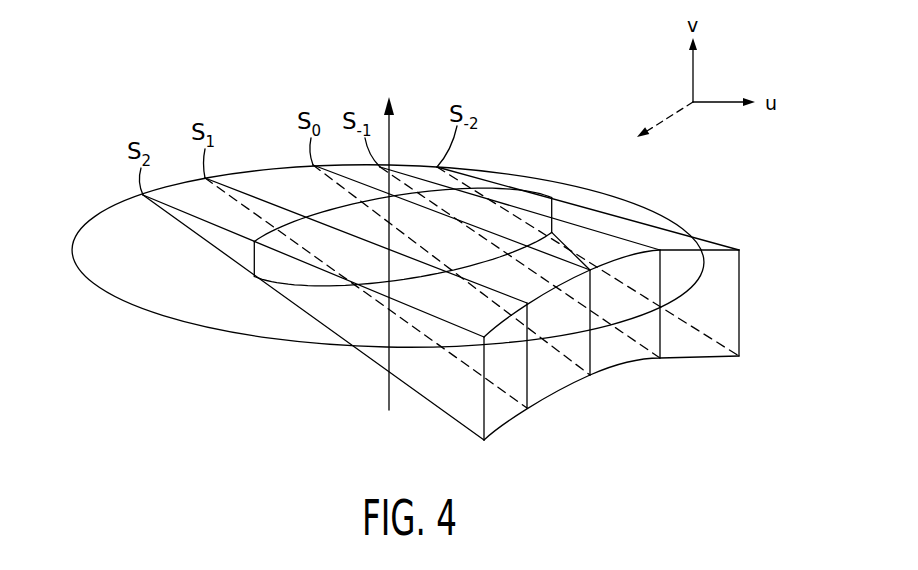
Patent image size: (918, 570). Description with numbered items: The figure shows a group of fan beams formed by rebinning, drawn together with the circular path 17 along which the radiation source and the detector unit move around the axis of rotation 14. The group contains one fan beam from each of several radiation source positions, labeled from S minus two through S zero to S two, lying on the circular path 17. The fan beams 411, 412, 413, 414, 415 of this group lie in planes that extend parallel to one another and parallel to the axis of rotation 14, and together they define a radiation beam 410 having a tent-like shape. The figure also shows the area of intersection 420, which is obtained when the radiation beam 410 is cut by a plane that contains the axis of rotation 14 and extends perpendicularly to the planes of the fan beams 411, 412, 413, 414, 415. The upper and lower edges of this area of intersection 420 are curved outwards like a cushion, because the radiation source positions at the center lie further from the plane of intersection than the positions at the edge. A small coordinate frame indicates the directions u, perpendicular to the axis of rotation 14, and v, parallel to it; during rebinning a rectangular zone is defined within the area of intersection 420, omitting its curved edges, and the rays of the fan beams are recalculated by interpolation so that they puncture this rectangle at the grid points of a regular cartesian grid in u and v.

The axis of rotation 14 is at (393, 134).
The circular path 17 is at (658, 208).
The radiation beam 410 is at (624, 339).
The fan beam 411 is at (497, 440).
The fan beam 412 is at (539, 395).
The fan beam 413 is at (602, 363).
The fan beam 414 is at (672, 345).
The fan beam 415 is at (751, 344).
The area of intersection 420 is at (497, 190).